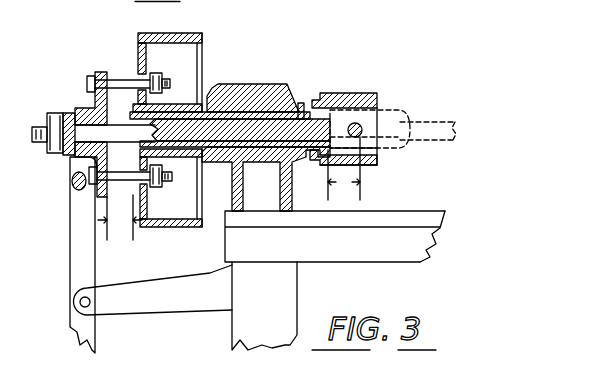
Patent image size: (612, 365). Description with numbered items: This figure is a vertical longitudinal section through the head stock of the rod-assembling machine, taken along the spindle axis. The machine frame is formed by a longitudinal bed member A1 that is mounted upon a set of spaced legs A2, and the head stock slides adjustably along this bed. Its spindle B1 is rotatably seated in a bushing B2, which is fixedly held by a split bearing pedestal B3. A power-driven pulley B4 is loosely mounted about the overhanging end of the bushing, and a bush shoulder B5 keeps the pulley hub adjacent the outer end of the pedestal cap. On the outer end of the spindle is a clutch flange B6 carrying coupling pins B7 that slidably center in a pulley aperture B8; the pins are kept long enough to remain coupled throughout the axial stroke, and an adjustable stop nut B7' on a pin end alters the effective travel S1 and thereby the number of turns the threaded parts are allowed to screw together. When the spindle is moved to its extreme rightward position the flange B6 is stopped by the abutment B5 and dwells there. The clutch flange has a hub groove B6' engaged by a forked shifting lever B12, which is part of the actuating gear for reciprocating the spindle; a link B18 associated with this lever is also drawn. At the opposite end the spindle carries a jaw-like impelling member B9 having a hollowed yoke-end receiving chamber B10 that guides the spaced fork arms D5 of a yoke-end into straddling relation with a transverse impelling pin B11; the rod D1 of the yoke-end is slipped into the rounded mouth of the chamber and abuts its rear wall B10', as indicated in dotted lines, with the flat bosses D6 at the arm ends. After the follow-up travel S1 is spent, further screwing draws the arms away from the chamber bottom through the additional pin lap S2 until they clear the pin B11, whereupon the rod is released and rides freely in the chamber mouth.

The bed member A1 is at (407, 238).
The spaced legs A2 is at (272, 328).
The spindle B1 is at (300, 103).
The bushing B2 is at (217, 84).
The split bearing pedestal B3 is at (258, 88).
The power-driven pulley B4 is at (167, 37).
The bush shoulder B5 is at (133, 110).
The clutch flange B6 is at (62, 171).
The hub groove B6' is at (67, 103).
The coupling pins B7 is at (87, 204).
The adjustable stop nut B7' is at (127, 47).
The pulley aperture B8 is at (160, 227).
The impelling member B9 is at (347, 143).
The yoke-end receiving chamber B10 is at (344, 102).
The rear wall B10' is at (337, 176).
The transverse impelling pin B11 is at (362, 123).
The forked shifting lever B12 is at (78, 237).
The link B18 is at (122, 315).
The male rod portion D1 is at (422, 122).
The fork arms D5 is at (387, 110).
The flat bosses D6 is at (373, 163).
The spindle travel S1 is at (120, 217).
The pin lap S2 is at (344, 168).